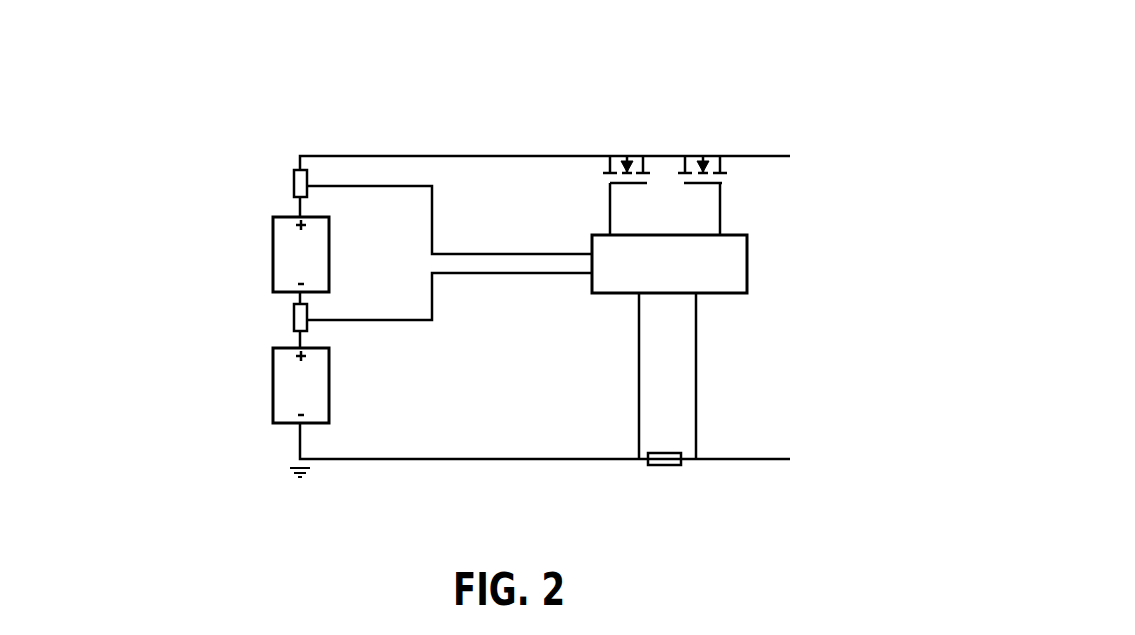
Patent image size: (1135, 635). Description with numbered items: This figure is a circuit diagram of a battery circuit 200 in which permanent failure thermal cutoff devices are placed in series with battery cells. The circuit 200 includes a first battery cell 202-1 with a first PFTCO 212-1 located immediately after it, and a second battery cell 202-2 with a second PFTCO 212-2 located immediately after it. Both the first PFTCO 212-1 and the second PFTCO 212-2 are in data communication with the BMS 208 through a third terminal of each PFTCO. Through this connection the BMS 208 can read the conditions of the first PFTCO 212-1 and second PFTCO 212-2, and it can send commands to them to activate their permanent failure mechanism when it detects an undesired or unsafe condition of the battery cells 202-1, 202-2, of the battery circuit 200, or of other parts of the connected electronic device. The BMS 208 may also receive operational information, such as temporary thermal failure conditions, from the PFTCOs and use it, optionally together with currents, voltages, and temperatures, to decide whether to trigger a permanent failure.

The battery circuit 200 is at (802, 97).
The second PFTCO 212-2 is at (307, 182).
The second battery cell 202-2 is at (329, 234).
The first PFTCO 212-1 is at (294, 325).
The first battery cell 202-1 is at (329, 385).
The BMS 208 is at (669, 264).